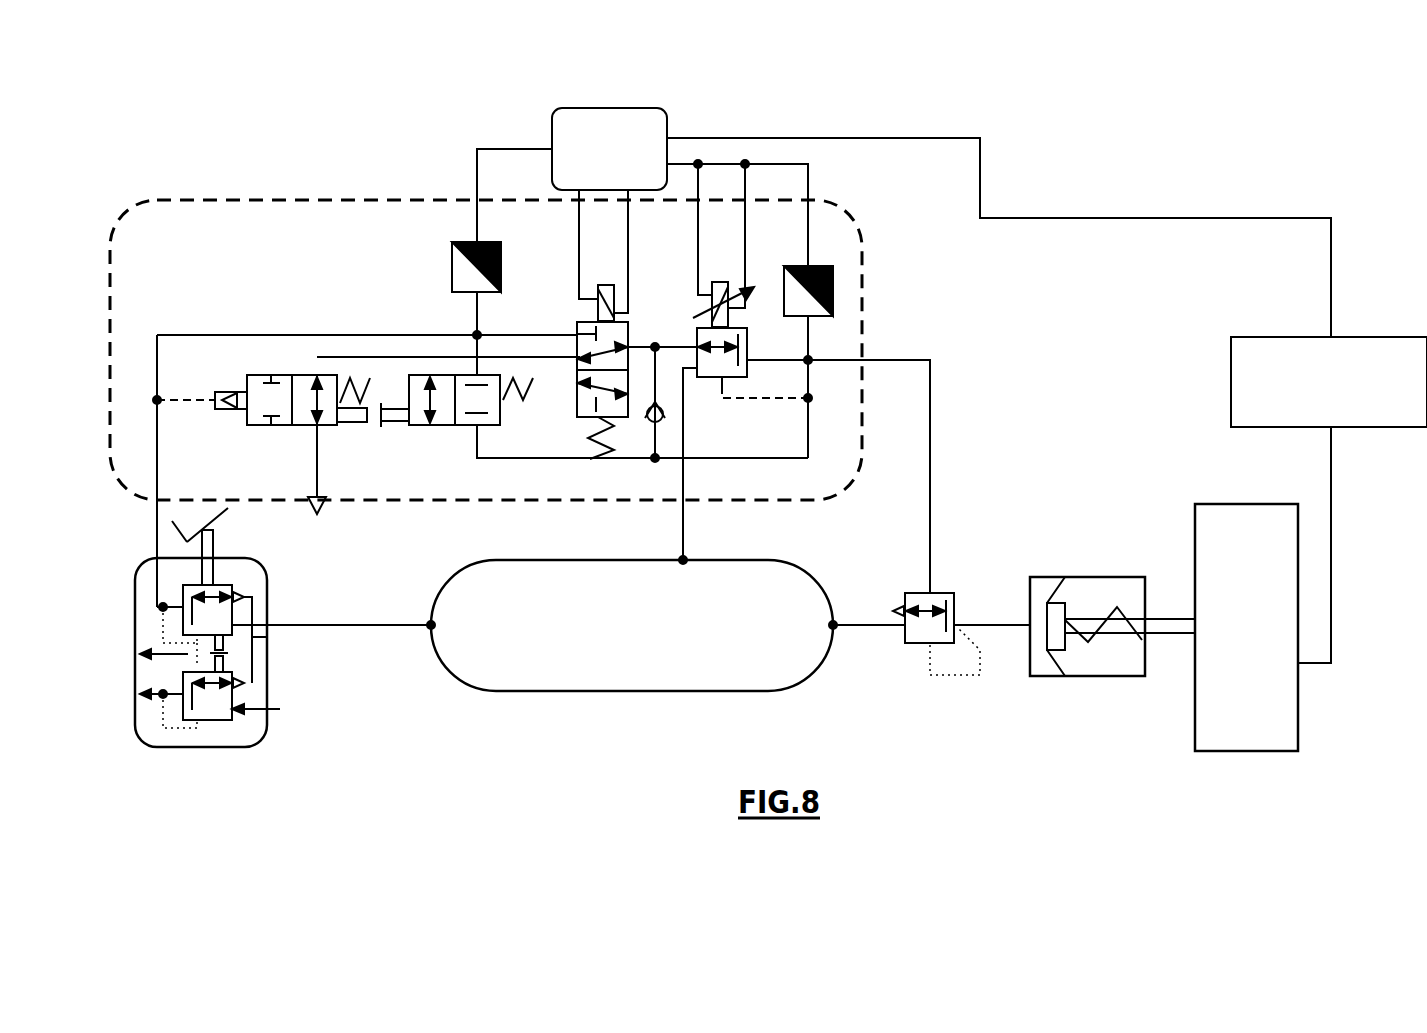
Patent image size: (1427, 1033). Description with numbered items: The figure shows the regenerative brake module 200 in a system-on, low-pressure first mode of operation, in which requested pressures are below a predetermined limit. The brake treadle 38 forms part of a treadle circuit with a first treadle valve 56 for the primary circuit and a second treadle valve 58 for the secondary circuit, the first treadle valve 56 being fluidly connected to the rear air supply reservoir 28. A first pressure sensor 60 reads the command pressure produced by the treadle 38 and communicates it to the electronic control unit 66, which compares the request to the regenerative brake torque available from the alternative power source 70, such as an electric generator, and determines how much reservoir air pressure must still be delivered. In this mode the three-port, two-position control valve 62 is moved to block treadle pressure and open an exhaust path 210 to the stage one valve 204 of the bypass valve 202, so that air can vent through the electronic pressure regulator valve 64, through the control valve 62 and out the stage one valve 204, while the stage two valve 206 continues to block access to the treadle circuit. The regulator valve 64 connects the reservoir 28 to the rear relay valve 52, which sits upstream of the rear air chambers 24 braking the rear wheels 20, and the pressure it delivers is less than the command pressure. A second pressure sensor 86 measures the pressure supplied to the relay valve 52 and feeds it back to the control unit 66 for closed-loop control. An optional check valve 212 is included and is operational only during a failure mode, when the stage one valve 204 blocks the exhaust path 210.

The regenerative brake module 200 is at (1100, 140).
The valve 202 is at (283, 306).
The electronic control unit 66 is at (668, 126).
The first pressure sensor 60 is at (452, 272).
The second pressure sensor 86 is at (833, 290).
The 3/2 valve 62 is at (628, 334).
The electronic pressure regulator valve 64 is at (710, 377).
The stage one valve 204 is at (262, 425).
The stage two valve 206 is at (447, 425).
The exhaust path 210 is at (319, 452).
The check valve 212 is at (647, 431).
The brake treadle 38 is at (227, 512).
The first treadle valve 56 is at (220, 615).
The second treadle valve 58 is at (230, 720).
The rear air supply reservoir 28 is at (686, 672).
The rear relay valve 52 is at (950, 593).
The rear air chambers 24 is at (1085, 577).
The rear wheels 20 is at (1271, 693).
The alternative power source 70 is at (1317, 395).